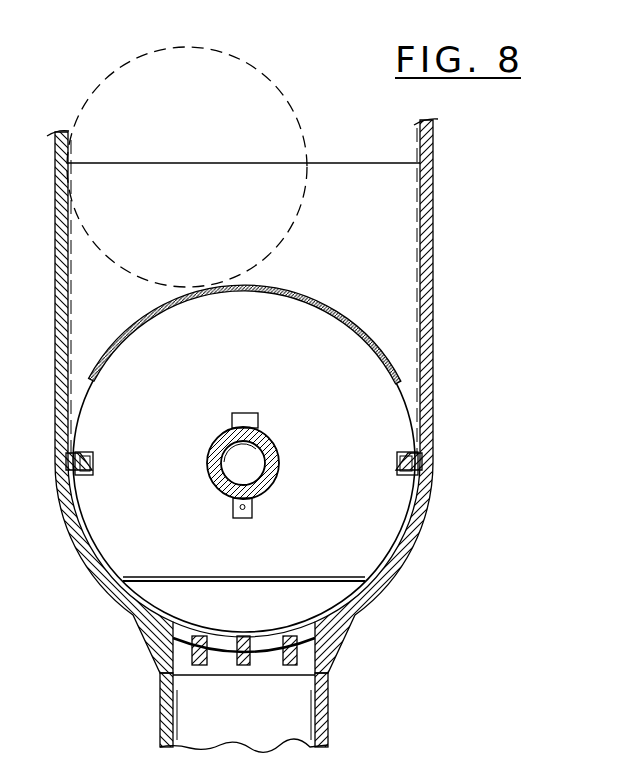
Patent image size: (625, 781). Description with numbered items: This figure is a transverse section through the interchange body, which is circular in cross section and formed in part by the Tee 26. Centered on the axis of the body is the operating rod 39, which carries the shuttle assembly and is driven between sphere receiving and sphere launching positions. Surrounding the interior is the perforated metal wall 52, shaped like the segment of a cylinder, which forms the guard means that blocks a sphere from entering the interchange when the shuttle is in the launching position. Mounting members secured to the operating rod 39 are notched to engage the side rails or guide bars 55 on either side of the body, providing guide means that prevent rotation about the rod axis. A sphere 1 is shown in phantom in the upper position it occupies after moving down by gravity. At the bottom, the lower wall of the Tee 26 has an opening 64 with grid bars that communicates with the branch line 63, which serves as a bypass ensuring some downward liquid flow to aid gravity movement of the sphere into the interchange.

The sphere 1 is at (187, 162).
The Tee 26 is at (279, 397).
The operating rod 39 is at (272, 461).
The perforated metal wall 52 is at (244, 437).
The guide bars 55 is at (92, 454).
The branch line 63 is at (330, 723).
The opening 64 is at (300, 665).